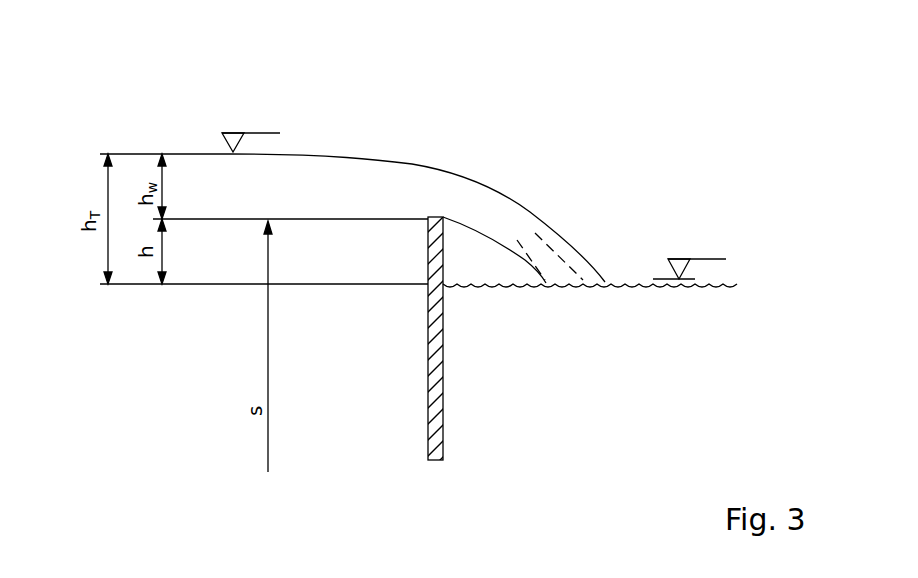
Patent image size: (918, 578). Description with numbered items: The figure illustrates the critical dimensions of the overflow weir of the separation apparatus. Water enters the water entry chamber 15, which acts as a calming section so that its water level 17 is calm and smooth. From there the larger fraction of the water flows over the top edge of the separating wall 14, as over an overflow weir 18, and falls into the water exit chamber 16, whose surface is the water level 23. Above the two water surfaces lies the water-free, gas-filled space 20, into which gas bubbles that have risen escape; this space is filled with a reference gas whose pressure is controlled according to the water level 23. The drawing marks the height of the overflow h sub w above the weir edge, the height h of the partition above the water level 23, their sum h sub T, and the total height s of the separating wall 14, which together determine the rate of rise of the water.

The separating wall 14 is at (434, 398).
The water entry chamber 15 is at (170, 410).
The water exit chamber 16 is at (602, 408).
The water level 17 is at (255, 133).
The overflow weir 18 is at (412, 187).
The gas-filled space 20 is at (572, 44).
The water level 23 is at (705, 258).